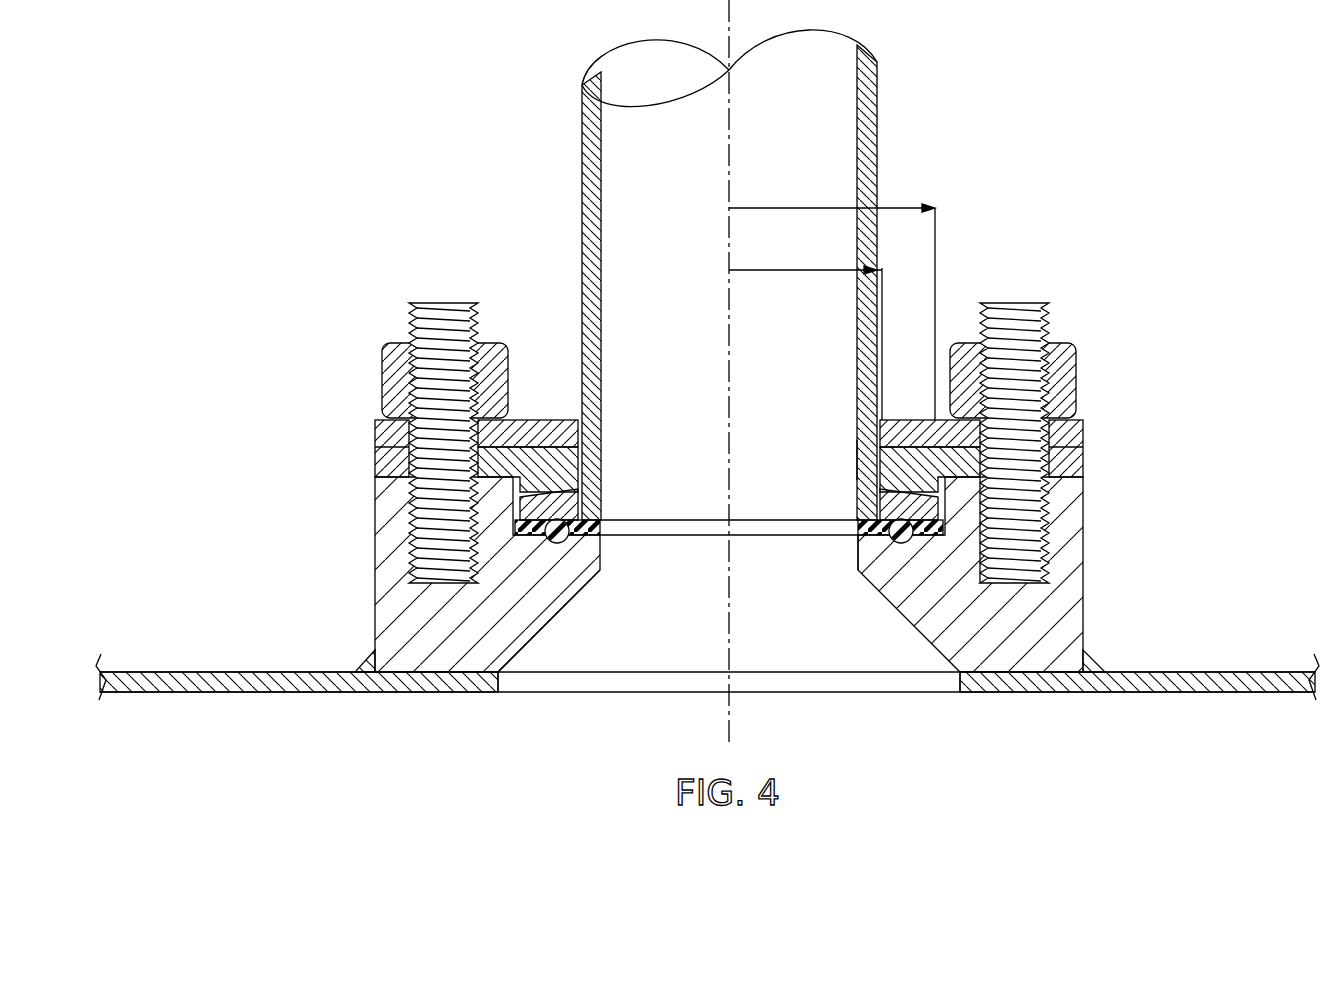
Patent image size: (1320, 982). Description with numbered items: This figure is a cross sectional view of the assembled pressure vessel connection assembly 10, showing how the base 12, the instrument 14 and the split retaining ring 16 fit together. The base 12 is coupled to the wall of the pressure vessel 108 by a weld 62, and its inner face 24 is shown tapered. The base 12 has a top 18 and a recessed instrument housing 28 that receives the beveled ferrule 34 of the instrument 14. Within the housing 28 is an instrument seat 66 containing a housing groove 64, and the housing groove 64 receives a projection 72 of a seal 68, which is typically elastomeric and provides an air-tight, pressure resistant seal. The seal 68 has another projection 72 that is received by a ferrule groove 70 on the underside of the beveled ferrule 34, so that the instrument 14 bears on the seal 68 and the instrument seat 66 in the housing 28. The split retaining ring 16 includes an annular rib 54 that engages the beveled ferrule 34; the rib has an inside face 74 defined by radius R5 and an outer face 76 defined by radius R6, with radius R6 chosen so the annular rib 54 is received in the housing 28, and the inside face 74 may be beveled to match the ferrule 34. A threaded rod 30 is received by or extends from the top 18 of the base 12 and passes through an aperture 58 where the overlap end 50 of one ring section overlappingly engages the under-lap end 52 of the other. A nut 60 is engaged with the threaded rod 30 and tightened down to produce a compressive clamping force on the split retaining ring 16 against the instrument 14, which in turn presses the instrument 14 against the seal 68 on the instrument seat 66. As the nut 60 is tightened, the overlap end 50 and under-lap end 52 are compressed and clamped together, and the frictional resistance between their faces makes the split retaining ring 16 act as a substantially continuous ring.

The pressure vessel connection assembly 10 is at (707, 371).
The base 12 is at (375, 612).
The instrument 14 is at (754, 275).
The split retaining ring 16 is at (378, 443).
The top 18 is at (390, 465).
The inner face 24 is at (915, 632).
The instrument housing 28 is at (940, 512).
The threaded rod 30 is at (1033, 439).
The ferrule 34 is at (520, 507).
The overlap end 50 is at (1083, 440).
The under-lap end 52 is at (1083, 462).
The annular rib 54 is at (556, 450).
The aperture 58 is at (1080, 420).
The nut 60 is at (1078, 380).
The weld 62 is at (1093, 662).
The housing groove 64 is at (566, 575).
The instrument seat 66 is at (910, 548).
The seal 68 is at (860, 527).
The ferrule groove 70 is at (570, 494).
The projection 72 is at (574, 556).
The inside face 74 is at (872, 463).
The outer face 76 is at (948, 490).
The pressure vessel 108 is at (265, 692).
The radius R5 is at (780, 272).
The radius R6 is at (780, 208).